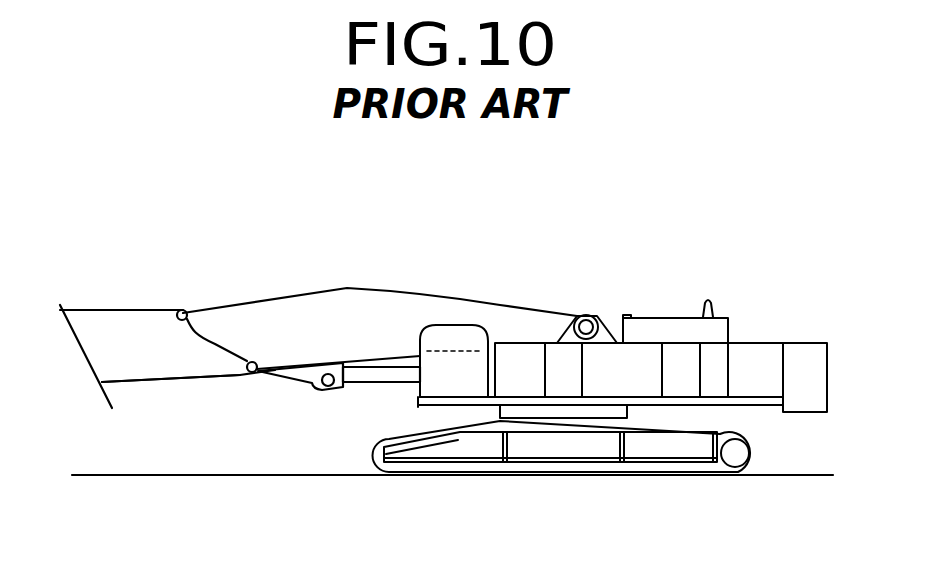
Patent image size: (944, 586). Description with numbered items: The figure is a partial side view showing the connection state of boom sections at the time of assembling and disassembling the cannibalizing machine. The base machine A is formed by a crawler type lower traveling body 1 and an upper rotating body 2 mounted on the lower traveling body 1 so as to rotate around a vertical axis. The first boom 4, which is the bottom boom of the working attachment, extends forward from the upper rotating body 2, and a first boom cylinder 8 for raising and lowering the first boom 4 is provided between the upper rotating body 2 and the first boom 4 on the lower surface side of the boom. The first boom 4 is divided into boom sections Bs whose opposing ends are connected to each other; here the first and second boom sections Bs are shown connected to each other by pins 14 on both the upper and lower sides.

The lower traveling body 1 is at (628, 477).
The upper rotating body 2 is at (722, 316).
The first boom 4 is at (125, 306).
The first boom cylinder 8 is at (378, 392).
The pins 14 is at (184, 310).
The boom sections Bs is at (300, 313).
The base machine A is at (443, 374).